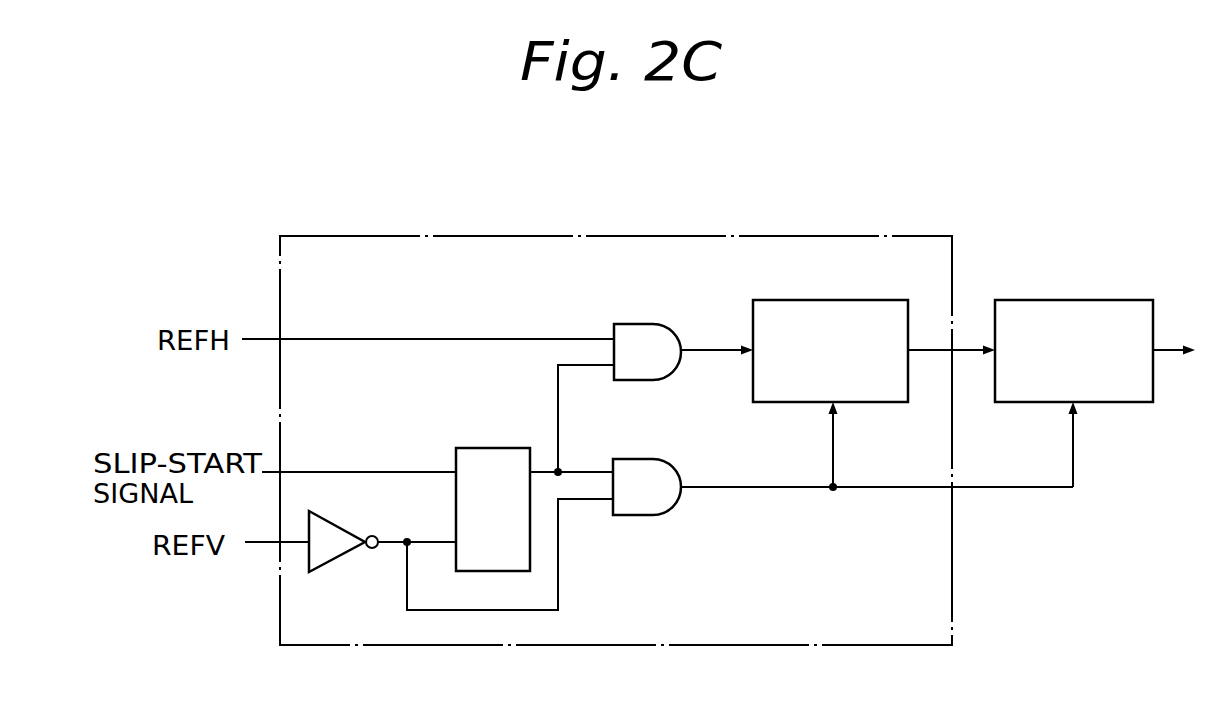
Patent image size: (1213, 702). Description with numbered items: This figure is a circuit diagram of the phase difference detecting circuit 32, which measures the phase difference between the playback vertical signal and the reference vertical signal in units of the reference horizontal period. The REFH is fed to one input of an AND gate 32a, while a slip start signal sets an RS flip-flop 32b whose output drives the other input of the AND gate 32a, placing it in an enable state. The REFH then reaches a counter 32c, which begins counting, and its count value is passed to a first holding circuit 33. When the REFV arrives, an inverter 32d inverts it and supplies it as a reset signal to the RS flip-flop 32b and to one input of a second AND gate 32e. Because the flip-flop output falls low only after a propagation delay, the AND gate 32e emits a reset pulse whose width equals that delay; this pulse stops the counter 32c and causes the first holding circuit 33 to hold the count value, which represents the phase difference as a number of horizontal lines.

The phase difference detecting circuit 32 is at (690, 646).
The AND gate 32a is at (643, 324).
The RS flip-flop 32b is at (488, 447).
The counter 32c is at (818, 300).
The inverter 32d is at (333, 558).
The AND gate 32e is at (642, 517).
The first holding circuit 33 is at (1067, 300).